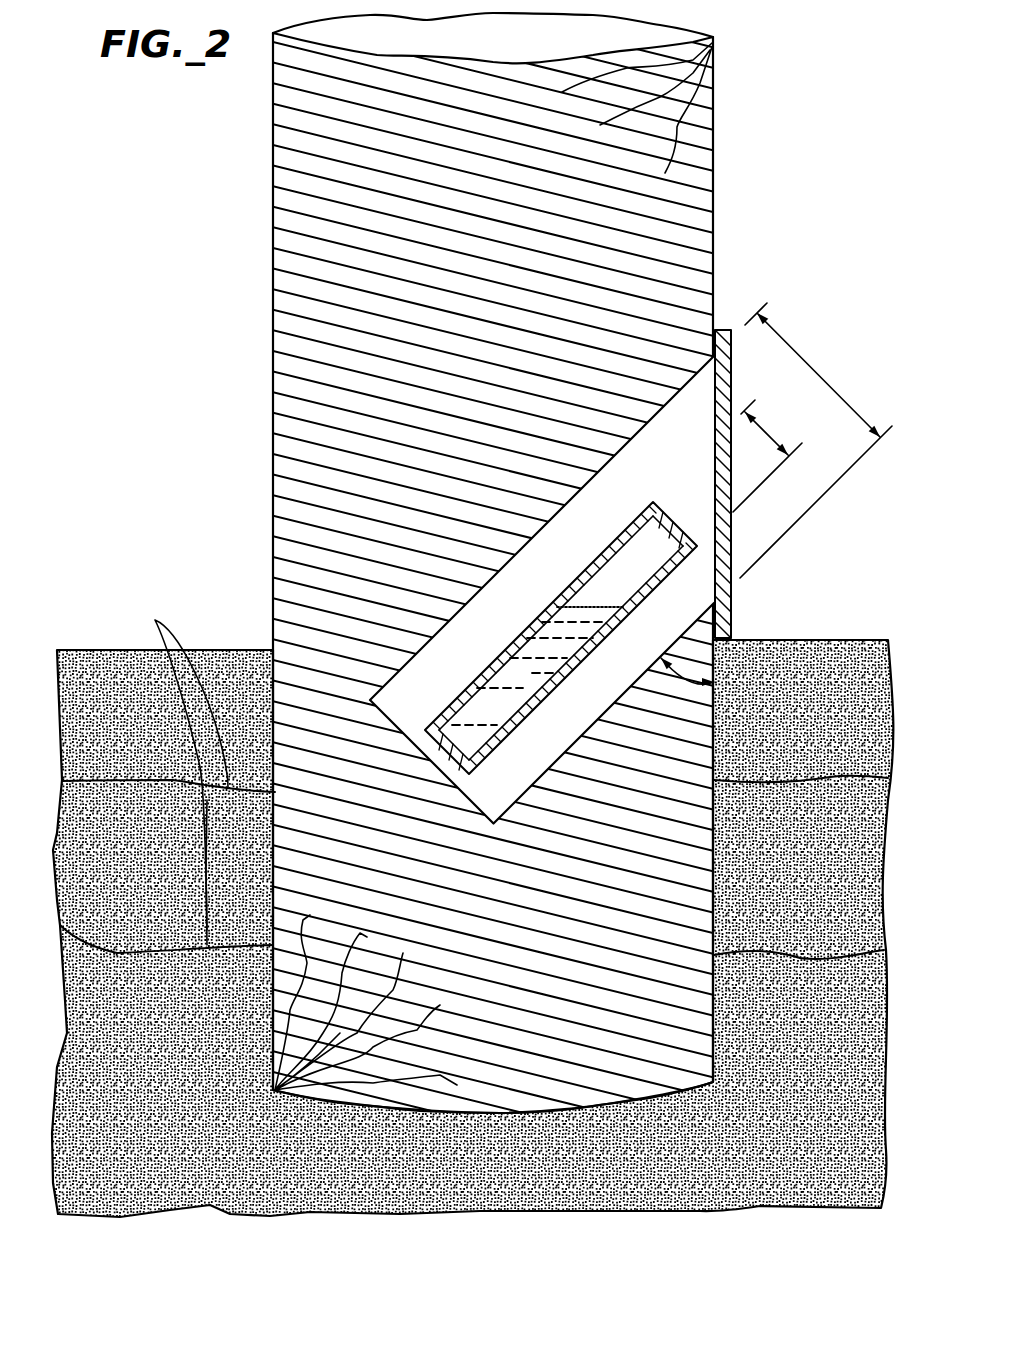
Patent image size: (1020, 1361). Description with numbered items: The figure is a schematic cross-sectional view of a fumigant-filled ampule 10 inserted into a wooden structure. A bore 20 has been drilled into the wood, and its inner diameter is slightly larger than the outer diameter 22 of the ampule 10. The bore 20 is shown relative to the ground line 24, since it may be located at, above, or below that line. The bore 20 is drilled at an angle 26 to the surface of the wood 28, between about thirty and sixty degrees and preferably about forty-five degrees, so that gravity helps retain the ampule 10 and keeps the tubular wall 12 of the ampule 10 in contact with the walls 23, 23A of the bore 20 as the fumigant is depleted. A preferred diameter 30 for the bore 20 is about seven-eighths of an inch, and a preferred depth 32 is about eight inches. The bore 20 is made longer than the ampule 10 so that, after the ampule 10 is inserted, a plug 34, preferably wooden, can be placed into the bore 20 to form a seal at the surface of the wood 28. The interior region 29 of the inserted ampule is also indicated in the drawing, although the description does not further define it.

The ampule 10 is at (568, 625).
The tubular wall 12 is at (643, 604).
The bore 20 is at (665, 367).
The outer diameter 22 is at (768, 432).
The wall of the bore 23 is at (647, 600).
The wall of the bore 23A is at (612, 540).
The ground line 24 is at (156, 621).
The angle 26 is at (693, 672).
The surface of the wood 28 is at (705, 150).
The chamber 29 is at (560, 678).
The diameter 30 is at (797, 352).
The depth 32 is at (710, 383).
The plug 34 is at (732, 614).